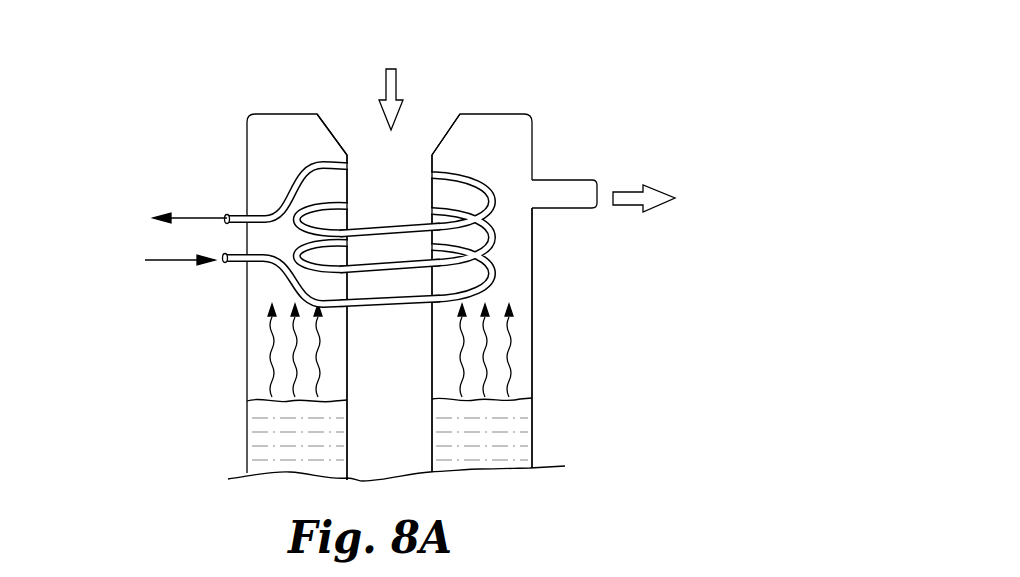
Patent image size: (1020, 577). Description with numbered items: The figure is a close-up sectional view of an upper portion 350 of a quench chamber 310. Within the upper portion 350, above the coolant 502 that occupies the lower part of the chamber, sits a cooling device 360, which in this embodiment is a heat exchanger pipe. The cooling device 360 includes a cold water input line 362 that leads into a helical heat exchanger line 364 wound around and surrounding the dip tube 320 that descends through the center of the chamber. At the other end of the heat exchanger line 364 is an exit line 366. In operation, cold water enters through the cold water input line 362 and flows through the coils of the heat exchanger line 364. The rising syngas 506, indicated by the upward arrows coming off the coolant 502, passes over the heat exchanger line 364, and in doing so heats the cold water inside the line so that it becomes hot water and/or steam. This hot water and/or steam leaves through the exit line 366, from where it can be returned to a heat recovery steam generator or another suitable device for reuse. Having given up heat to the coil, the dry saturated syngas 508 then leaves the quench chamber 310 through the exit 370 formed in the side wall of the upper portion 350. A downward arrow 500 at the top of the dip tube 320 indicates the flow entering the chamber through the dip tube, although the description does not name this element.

The quench chamber 310 is at (592, 85).
The dip tube 320 is at (332, 126).
The upper portion 350 is at (550, 342).
The exit 370 is at (577, 172).
The helical heat exchanger line 364 is at (477, 172).
The exit line 366 is at (166, 203).
The cold water input line 362 is at (155, 270).
The cooling device 360 is at (145, 245).
The feed stream 500 is at (403, 88).
The coolant 502 is at (511, 440).
The rising syngas 506 is at (258, 352).
The dry saturated syngas 508 is at (645, 172).